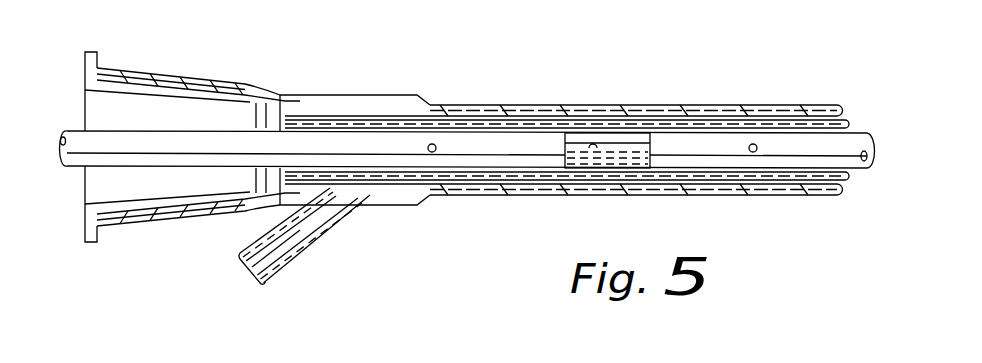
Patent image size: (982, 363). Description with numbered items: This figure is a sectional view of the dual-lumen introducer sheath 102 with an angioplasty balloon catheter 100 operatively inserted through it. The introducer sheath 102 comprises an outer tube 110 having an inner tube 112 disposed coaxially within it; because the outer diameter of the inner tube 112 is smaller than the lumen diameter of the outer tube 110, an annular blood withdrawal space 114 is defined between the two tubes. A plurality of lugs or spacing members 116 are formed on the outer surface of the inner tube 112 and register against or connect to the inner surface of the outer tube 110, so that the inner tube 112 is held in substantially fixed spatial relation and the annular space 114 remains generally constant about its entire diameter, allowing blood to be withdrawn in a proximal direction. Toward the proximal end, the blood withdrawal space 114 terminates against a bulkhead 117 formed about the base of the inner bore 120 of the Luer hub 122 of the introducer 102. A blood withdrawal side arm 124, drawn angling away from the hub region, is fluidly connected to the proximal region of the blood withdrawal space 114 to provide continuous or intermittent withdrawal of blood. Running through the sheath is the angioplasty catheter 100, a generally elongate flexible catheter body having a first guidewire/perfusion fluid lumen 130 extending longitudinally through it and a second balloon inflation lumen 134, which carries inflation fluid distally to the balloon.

The angioplasty balloon catheter 100 is at (75, 167).
The dual-lumen introducer sheath 102 is at (492, 97).
The outer tube 110 is at (567, 106).
The inner tube 112 is at (724, 107).
The annular blood withdrawal space 114 is at (844, 116).
The lugs or spacing members 116 is at (460, 196).
The bulkhead 117 is at (285, 200).
The inner bore 120 is at (200, 117).
The Luer hub 122 is at (176, 73).
The blood withdrawal side arm 124 is at (250, 237).
The guidewire/perfusion fluid lumen 130 is at (630, 133).
The balloon inflation lumen 134 is at (640, 169).